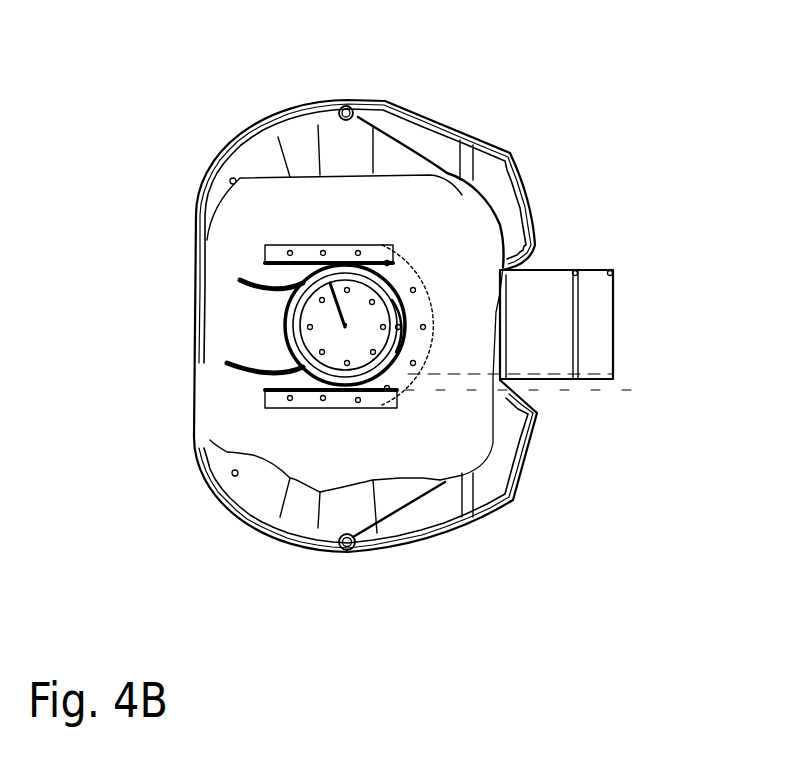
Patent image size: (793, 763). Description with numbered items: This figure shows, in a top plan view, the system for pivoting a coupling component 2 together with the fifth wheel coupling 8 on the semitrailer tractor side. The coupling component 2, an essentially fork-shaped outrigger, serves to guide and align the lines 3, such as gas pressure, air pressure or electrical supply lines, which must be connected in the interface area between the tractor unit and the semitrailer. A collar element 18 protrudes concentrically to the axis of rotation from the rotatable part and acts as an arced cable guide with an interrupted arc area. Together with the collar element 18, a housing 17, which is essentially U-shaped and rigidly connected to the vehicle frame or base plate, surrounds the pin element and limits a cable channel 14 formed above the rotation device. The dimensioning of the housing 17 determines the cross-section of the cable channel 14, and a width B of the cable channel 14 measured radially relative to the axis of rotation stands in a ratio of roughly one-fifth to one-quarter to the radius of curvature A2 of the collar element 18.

The coupling component 2 is at (595, 290).
The lines 3 is at (243, 278).
The fifth wheel coupling 8 is at (297, 134).
The cable channel 14 is at (233, 2).
The housing 17 is at (413, 290).
The collar element 18 is at (392, 263).
The radius of curvature A2 is at (323, 302).
The width B is at (618, 374).